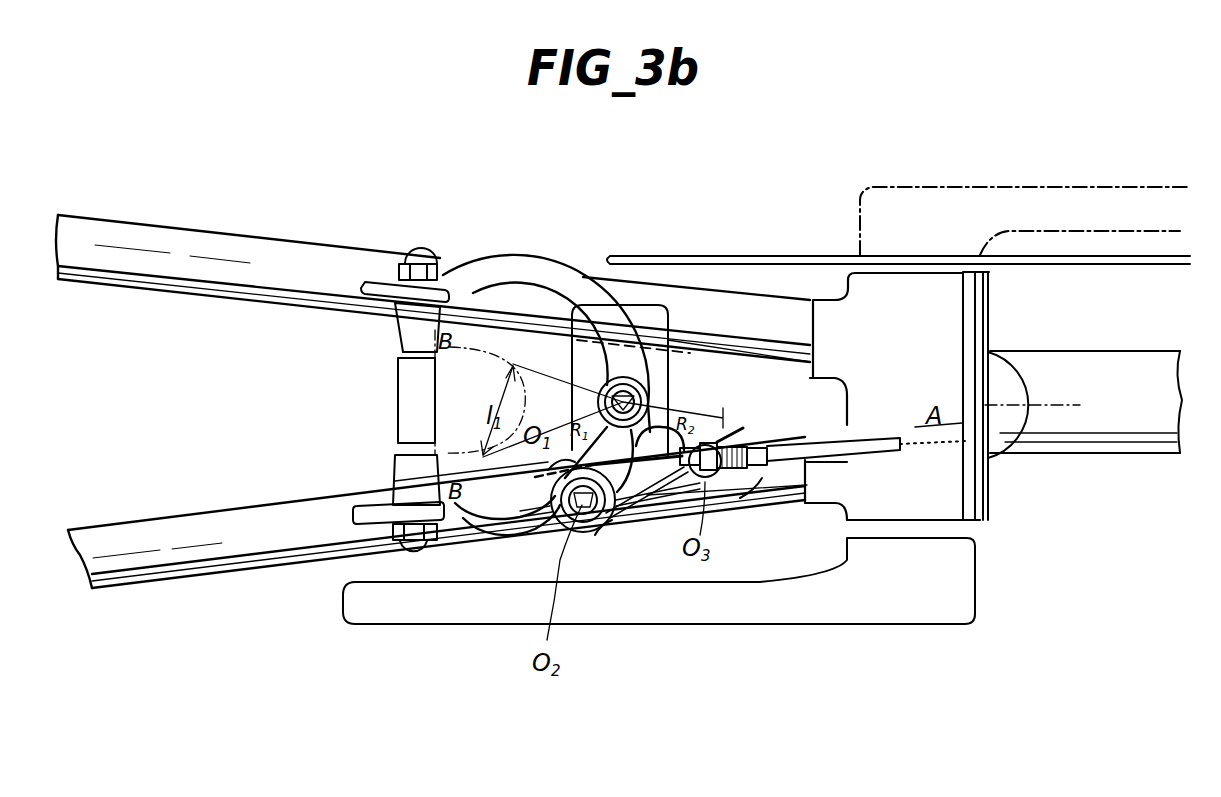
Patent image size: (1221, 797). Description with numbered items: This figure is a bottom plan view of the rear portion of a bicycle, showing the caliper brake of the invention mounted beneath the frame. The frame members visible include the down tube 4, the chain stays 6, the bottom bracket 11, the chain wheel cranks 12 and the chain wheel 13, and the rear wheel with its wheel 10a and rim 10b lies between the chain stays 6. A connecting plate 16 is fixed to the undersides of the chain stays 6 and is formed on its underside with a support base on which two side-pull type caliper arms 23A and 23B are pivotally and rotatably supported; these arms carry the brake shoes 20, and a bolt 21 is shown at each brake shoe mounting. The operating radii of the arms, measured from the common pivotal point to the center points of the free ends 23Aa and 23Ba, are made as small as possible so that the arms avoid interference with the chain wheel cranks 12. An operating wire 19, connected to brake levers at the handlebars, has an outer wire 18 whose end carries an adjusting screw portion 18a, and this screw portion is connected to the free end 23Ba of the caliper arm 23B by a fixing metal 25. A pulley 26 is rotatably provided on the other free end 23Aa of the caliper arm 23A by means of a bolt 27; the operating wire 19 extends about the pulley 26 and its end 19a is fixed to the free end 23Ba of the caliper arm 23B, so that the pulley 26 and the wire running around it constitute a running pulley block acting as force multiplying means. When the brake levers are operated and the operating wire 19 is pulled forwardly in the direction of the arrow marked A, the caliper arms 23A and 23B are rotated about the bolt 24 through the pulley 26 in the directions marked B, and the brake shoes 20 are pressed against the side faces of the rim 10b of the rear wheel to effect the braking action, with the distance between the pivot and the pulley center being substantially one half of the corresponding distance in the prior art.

The down tube 4 is at (1158, 354).
The chain stays 6 is at (170, 230).
The wheel 10a is at (535, 401).
The rim 10b is at (398, 392).
The bottom bracket 11 is at (987, 487).
The chain wheel cranks 12 is at (1012, 187).
The chain wheel 13 is at (757, 255).
The connecting plate 16 is at (648, 298).
The outer wire 18 is at (860, 453).
The adjusting screw portion 18a is at (729, 467).
The operating wire 19 is at (943, 447).
The end of operating wire 19a is at (640, 492).
The brake shoes 20 is at (398, 335).
The bolt 21 is at (408, 247).
The caliper arm 23A is at (500, 253).
The free end of caliper arm 23A 23Aa is at (592, 535).
The caliper arm 23B is at (490, 535).
The free end of caliper arm 23B 23Ba is at (745, 500).
The bolt 24 is at (645, 392).
The fixing metal 25 is at (697, 478).
The pulley 26 is at (605, 525).
The bolt 27 is at (558, 538).